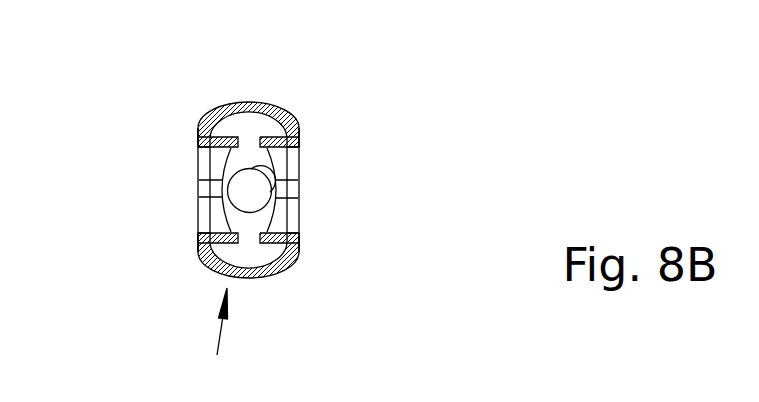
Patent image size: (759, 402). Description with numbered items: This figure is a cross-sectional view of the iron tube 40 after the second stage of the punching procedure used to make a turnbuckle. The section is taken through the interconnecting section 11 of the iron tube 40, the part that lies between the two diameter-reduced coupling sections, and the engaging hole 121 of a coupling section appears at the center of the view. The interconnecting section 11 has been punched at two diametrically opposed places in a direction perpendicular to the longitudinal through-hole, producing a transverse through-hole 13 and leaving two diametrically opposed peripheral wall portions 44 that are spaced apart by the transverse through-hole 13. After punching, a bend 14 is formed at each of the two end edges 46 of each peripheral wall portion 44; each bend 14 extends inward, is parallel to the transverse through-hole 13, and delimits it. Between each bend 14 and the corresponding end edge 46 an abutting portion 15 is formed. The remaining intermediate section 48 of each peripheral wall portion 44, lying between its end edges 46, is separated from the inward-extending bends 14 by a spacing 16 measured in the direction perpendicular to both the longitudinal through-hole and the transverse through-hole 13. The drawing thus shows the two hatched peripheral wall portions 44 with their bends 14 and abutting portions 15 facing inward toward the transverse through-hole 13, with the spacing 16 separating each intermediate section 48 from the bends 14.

The interconnecting section 11 is at (277, 115).
The transverse through-hole 13 is at (218, 219).
The bend 14 is at (226, 143).
The abutting portion 15 is at (198, 140).
The spacing 16 is at (250, 122).
The iron tube 40 is at (217, 338).
The peripheral wall portion 44 is at (212, 118).
The end edge 46 is at (198, 130).
The intermediate section 48 is at (250, 104).
The engaging hole 121 is at (269, 188).